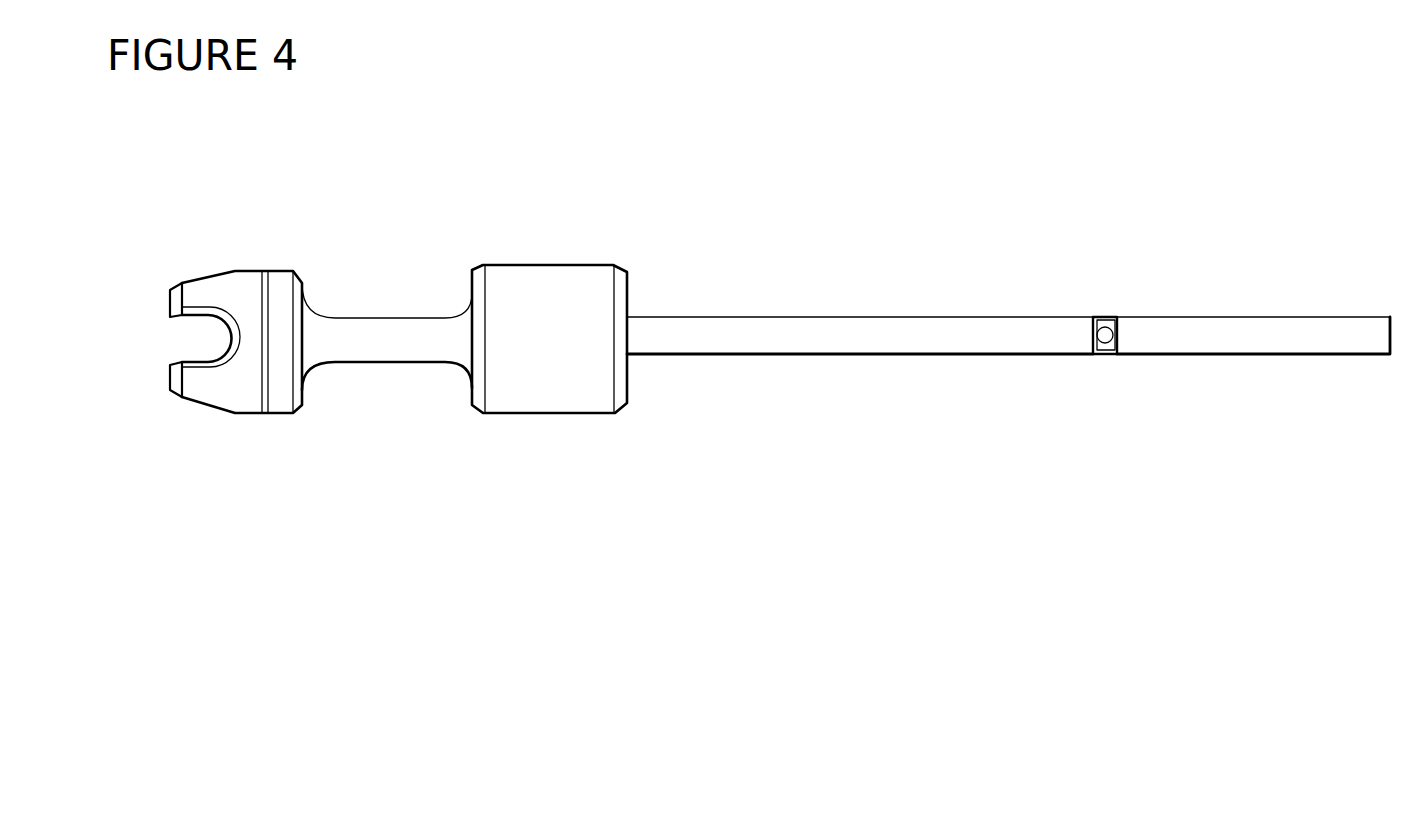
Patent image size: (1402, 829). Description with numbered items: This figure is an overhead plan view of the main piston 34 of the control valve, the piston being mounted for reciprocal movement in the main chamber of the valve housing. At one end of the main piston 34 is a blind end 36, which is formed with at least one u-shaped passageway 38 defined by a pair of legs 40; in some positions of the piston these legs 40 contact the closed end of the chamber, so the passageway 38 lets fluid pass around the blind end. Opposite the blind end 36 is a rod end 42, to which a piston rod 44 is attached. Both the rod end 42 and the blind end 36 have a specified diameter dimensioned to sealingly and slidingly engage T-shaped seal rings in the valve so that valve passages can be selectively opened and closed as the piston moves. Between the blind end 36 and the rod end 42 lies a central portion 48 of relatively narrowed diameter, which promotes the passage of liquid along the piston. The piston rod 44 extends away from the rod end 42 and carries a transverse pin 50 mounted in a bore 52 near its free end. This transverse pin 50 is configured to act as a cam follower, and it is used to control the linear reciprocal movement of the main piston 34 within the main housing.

The main piston 34 is at (545, 262).
The blind end 36 is at (252, 407).
The u-shaped passageway 38 is at (193, 362).
The legs 40 is at (168, 303).
The rod end 42 is at (618, 400).
The piston rod 44 is at (815, 318).
The central portion 48 is at (390, 362).
The transverse pin 50 is at (1105, 327).
The bore 52 is at (1105, 352).